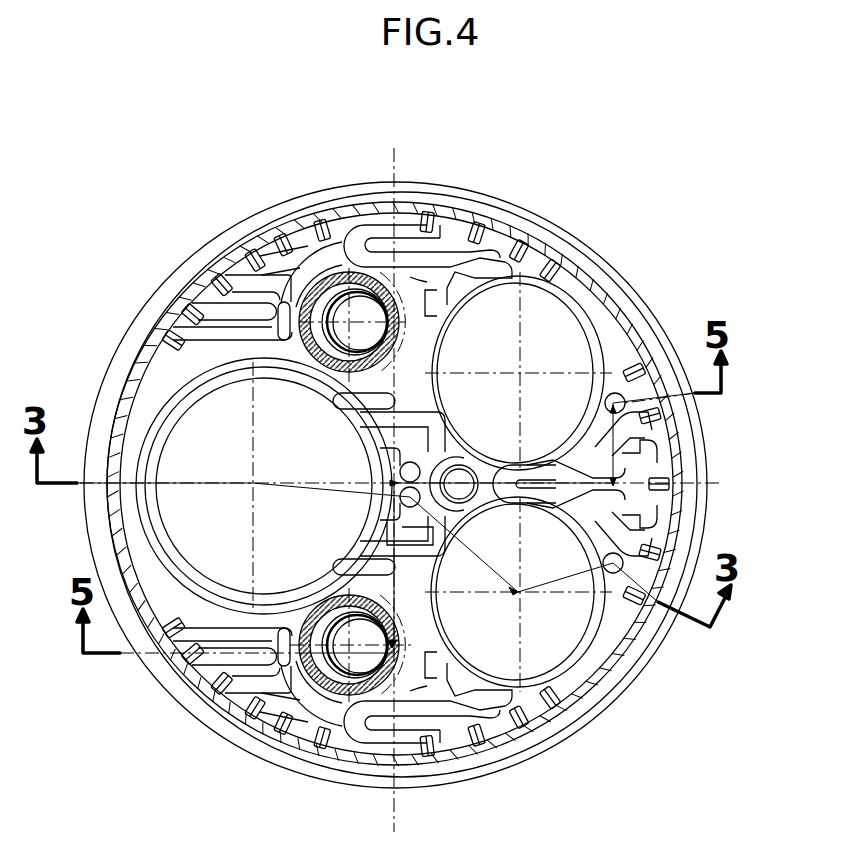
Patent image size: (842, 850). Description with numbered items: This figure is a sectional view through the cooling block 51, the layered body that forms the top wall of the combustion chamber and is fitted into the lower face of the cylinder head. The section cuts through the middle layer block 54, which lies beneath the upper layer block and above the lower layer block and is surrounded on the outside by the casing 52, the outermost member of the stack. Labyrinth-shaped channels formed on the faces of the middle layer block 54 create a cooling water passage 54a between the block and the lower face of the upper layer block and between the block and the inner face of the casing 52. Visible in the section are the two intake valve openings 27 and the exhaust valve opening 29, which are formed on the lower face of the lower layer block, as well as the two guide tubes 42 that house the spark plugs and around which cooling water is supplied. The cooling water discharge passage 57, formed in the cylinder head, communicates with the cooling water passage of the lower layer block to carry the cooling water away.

The intake valve opening 27 is at (563, 310).
The exhaust valve opening 29 is at (165, 455).
The guide tube 42 is at (349, 483).
The cooling block 51 is at (606, 236).
The casing 52 is at (636, 290).
The middle layer block 54 is at (460, 218).
The cooling water passage 54a is at (222, 345).
The cooling water discharge passage 57 is at (474, 500).